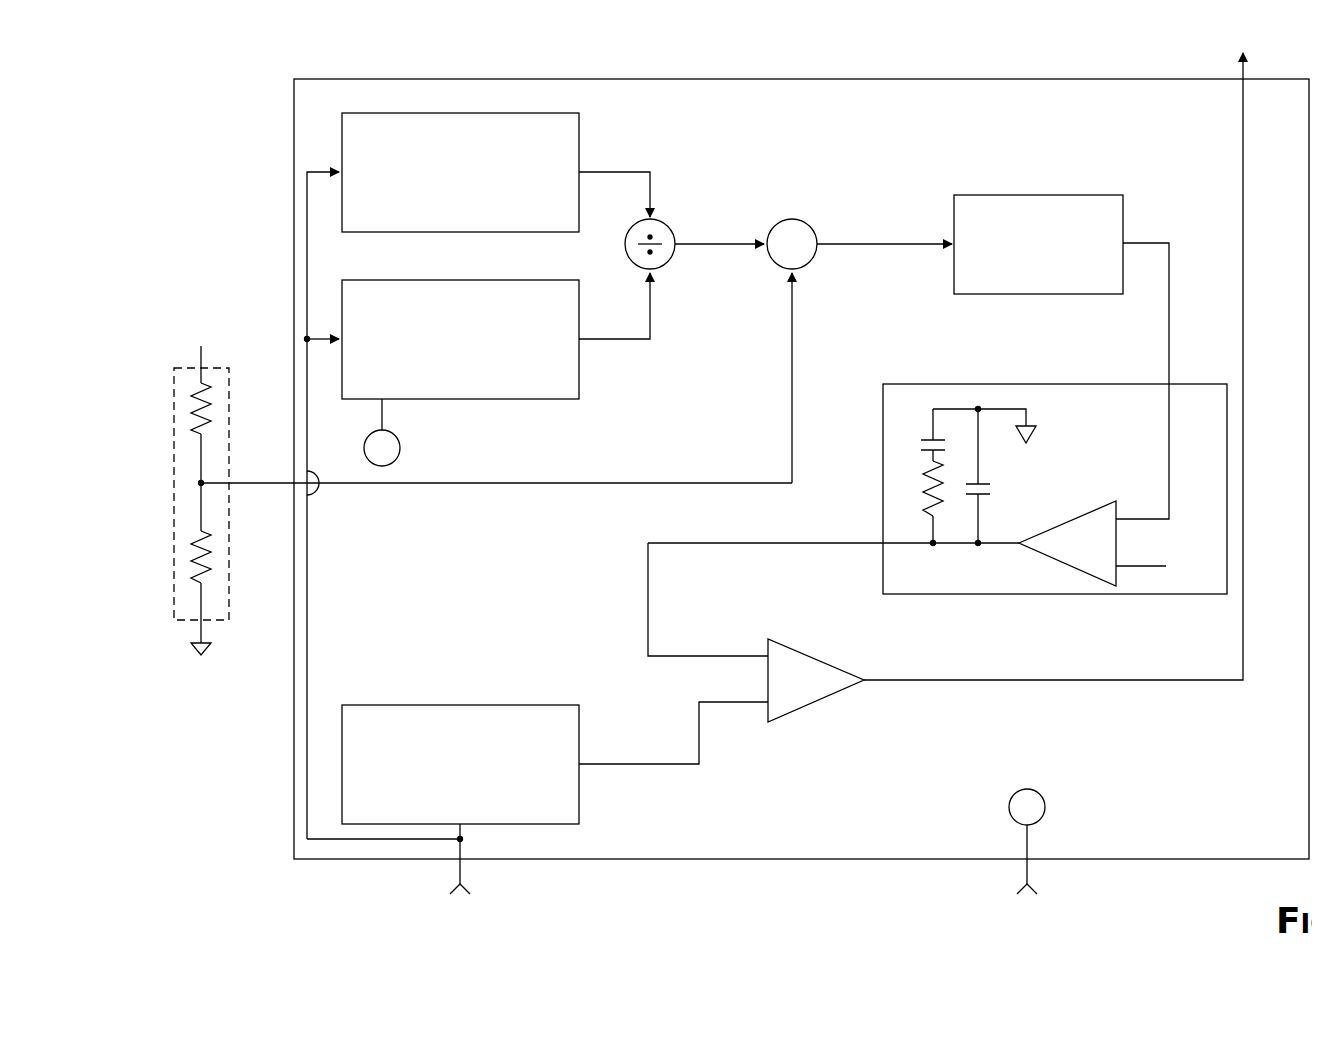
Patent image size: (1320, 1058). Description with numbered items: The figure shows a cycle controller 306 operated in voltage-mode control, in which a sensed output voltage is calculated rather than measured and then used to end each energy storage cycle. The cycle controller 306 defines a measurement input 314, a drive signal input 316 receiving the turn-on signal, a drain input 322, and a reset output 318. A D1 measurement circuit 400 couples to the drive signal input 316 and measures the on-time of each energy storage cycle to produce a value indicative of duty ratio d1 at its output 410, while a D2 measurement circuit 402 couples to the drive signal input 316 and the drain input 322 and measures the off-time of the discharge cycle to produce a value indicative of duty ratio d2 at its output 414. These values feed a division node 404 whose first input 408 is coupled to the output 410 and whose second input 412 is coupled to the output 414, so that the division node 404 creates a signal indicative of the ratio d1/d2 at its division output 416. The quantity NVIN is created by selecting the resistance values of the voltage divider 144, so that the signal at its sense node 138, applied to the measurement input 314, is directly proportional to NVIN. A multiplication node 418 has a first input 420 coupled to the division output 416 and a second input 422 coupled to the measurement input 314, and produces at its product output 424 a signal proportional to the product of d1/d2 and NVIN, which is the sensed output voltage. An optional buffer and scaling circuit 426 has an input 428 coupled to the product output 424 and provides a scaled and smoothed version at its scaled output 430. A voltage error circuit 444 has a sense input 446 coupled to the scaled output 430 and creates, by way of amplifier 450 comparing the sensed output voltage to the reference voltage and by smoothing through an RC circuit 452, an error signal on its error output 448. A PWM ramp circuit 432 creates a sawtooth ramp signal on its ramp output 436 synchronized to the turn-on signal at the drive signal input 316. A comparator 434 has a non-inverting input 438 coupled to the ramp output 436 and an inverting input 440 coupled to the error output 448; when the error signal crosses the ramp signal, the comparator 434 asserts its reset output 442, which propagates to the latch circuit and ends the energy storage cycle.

The cycle controller 306 is at (327, 78).
The reset output 318 is at (1242, 78).
The D1 measurement circuit 400 is at (438, 215).
The D2 measurement circuit 402 is at (438, 382).
The division node 404 is at (620, 243).
The first input 408 is at (652, 216).
The output 410 is at (580, 173).
The second input 412 is at (655, 268).
The output 414 is at (593, 330).
The division output 416 is at (670, 232).
The multiplication node 418 is at (780, 216).
The first input 420 is at (770, 262).
The second input 422 is at (786, 270).
The product output 424 is at (812, 262).
The buffer and scaling circuit 426 is at (1025, 194).
The input 428 is at (953, 250).
The scaled output 430 is at (1125, 238).
The PWM ramp circuit 432 is at (438, 807).
The comparator 434 is at (805, 650).
The ramp output 436 is at (580, 763).
The non-inverting input 438 is at (768, 705).
The inverting input 440 is at (767, 655).
The reset output 442 is at (865, 680).
The voltage error circuit 444 is at (1005, 383).
The sense input 446 is at (1168, 383).
The error output 448 is at (882, 542).
The amplifier 450 is at (1070, 518).
The RC circuit 452 is at (1022, 478).
The voltage divider 144 is at (173, 405).
The sense node 138 is at (200, 482).
The measurement input 314 is at (293, 485).
The drive signal input 316 is at (460, 858).
The drain input 322 is at (1028, 856).